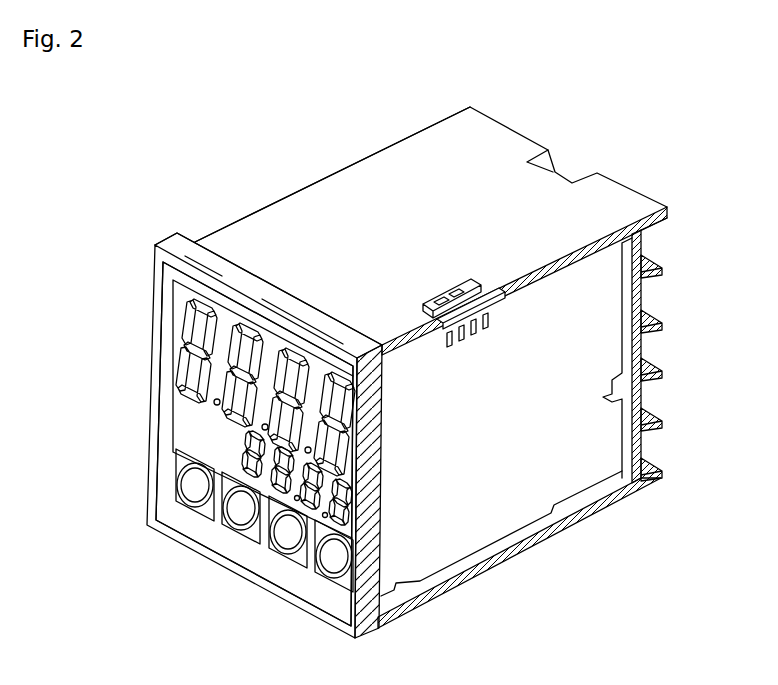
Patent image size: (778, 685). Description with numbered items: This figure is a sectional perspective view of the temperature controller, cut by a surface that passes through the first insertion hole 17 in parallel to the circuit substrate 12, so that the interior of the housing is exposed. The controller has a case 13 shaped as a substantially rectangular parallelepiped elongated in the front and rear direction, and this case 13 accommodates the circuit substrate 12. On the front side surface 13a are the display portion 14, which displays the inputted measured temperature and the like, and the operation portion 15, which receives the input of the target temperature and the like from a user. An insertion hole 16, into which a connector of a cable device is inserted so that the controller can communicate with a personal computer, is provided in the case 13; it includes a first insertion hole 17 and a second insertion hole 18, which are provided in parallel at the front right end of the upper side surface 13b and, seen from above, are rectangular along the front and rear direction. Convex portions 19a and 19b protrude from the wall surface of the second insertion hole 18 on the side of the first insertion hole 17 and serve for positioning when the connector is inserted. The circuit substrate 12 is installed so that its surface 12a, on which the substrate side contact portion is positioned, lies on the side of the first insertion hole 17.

The circuit substrate 12 is at (641, 316).
The surface of the circuit substrate 12a is at (503, 495).
The case 13 is at (620, 183).
The front side surface 13a is at (237, 552).
The upper side surface 13b is at (240, 238).
The display portion 14 is at (173, 414).
The operation portion 15 is at (172, 478).
The insertion hole 16 is at (391, 207).
The first insertion hole 17 is at (450, 297).
The second insertion hole 18 is at (457, 297).
The convex portion 19a is at (462, 297).
The convex portion 19b is at (447, 302).